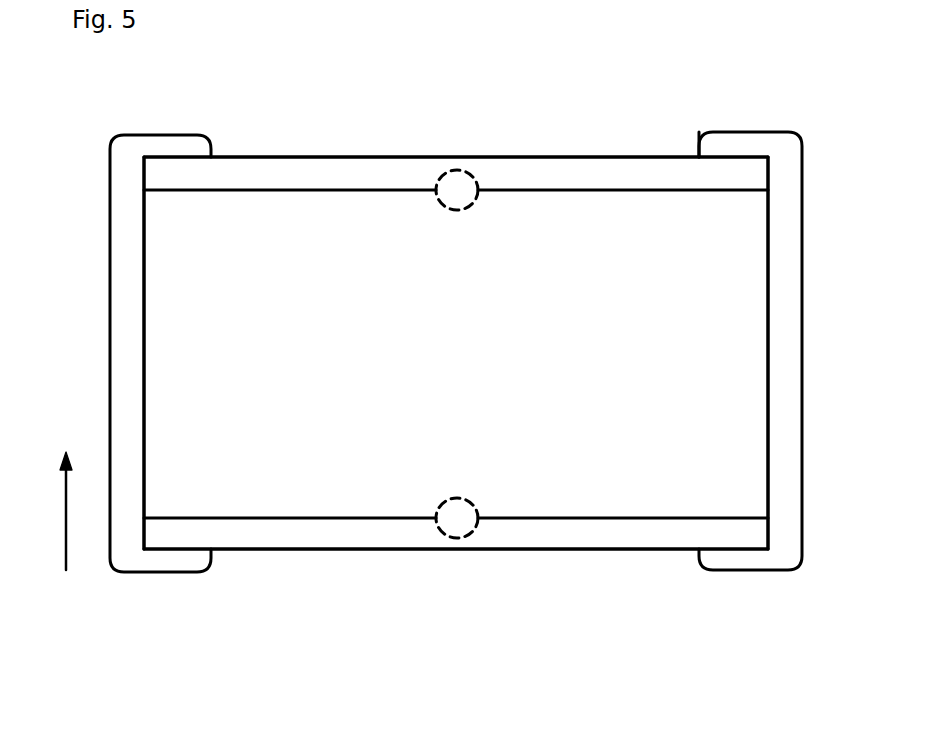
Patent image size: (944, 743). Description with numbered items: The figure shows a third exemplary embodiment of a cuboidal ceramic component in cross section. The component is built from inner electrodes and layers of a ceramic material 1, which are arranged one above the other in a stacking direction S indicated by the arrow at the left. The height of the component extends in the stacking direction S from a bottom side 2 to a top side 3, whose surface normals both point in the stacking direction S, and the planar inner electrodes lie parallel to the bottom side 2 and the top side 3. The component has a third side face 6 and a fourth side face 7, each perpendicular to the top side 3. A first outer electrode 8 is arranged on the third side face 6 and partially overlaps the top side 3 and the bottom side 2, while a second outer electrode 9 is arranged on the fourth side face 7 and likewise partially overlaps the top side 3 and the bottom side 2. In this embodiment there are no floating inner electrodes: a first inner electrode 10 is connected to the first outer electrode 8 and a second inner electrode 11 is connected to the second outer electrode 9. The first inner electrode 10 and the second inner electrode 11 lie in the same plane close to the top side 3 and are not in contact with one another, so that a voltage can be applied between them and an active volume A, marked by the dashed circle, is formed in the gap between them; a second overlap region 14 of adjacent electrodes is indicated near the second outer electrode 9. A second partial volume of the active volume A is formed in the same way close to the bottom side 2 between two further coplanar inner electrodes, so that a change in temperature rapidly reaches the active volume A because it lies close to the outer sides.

The ceramic material layers 1 is at (740, 282).
The bottom side 2 is at (405, 549).
The top side 3 is at (408, 157).
The third side face 6 is at (144, 378).
The fourth side face 7 is at (765, 385).
The first outer electrode 8 is at (123, 175).
The second outer electrode 9 is at (793, 174).
The first inner electrode 10 is at (233, 190).
The second inner electrode 11 is at (645, 190).
The second overlap region 14 is at (695, 134).
The active volume A is at (459, 170).
The stacking direction S is at (66, 520).